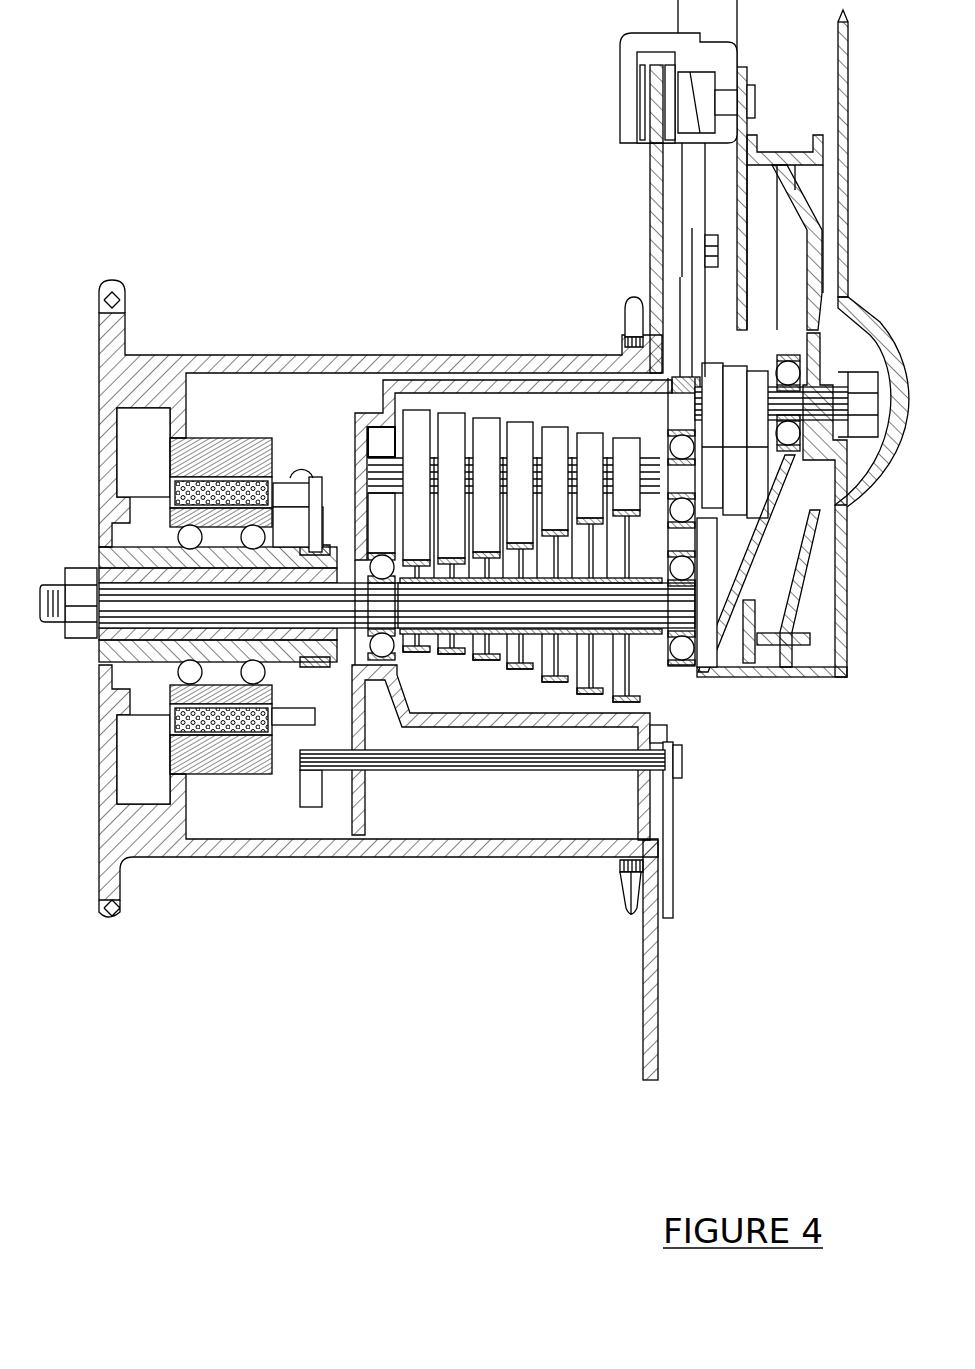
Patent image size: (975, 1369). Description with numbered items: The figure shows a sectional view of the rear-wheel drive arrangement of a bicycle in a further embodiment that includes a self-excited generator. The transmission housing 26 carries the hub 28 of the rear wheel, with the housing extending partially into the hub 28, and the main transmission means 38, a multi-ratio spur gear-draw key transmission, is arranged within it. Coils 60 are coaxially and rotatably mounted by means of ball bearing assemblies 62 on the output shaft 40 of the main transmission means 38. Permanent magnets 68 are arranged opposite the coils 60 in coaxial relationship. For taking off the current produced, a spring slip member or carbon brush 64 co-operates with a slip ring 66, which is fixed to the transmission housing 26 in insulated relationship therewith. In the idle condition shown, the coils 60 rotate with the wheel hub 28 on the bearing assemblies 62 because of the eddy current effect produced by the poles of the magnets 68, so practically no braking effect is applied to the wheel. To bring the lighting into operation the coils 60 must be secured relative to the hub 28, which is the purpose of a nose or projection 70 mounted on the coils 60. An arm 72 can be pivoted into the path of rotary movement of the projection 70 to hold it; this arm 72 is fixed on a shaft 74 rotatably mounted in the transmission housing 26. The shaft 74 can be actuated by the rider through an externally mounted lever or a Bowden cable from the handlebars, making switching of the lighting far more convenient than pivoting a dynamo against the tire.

The transmission housing 26 is at (677, 727).
The hub 28 is at (352, 355).
The main transmission means 38 is at (487, 457).
The output shaft 40 is at (605, 617).
The coils 60 is at (170, 495).
The ball bearing assemblies 62 is at (250, 538).
The spring slip member or carbon brush 64 is at (323, 497).
The slip ring 66 is at (187, 583).
The permanent magnets 68 is at (200, 440).
The nose or projection 70 is at (293, 725).
The arm 72 is at (322, 795).
The shaft 74 is at (540, 762).